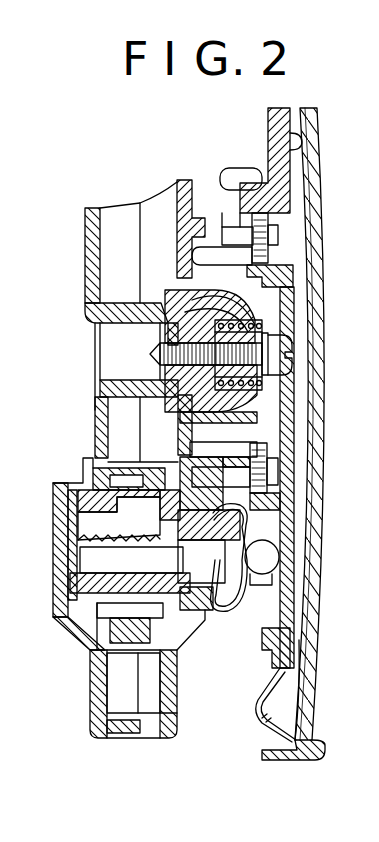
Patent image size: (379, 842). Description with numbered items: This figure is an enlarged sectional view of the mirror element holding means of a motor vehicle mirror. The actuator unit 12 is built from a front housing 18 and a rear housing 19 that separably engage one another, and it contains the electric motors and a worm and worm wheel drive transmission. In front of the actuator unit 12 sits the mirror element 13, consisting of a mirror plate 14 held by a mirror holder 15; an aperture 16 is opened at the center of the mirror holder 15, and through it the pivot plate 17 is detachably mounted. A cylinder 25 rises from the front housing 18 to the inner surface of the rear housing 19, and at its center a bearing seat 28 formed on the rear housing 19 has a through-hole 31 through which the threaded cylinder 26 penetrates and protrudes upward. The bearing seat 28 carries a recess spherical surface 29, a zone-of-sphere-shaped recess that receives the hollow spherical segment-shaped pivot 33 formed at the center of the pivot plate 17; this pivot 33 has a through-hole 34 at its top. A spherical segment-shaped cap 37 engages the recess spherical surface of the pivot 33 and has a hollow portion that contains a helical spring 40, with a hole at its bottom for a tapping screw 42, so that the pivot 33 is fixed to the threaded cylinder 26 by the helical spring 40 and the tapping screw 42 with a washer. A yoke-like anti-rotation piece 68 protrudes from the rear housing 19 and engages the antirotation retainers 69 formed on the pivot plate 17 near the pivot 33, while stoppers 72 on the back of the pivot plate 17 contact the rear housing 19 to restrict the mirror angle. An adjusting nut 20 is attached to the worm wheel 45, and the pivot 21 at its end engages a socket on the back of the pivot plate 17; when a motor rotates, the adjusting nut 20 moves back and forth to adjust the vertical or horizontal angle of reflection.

The actuator unit 12 is at (155, 738).
The mirror element 13 is at (322, 469).
The mirror plate 14 is at (307, 708).
The mirror holder 15 is at (262, 727).
The aperture 16 is at (290, 183).
The pivot plate 17 is at (254, 667).
The front housing 18 is at (90, 723).
The rear housing 19 is at (168, 723).
The adjusting nut 20 is at (214, 612).
The pivot 21 is at (263, 562).
The cylinder 25 is at (98, 322).
The threaded cylinder 26 is at (180, 338).
The bearing seat 28 is at (192, 254).
The recess spherical surface 29 is at (186, 410).
The through-hole 31 is at (165, 379).
The hollow spherical segment-shaped pivot 33 is at (296, 274).
The through-hole 34 is at (186, 306).
The spherical segment-shaped cap 37 is at (260, 300).
The helical spring 40 is at (247, 393).
The tapping screw 42 is at (275, 365).
The worm wheel 45 is at (97, 638).
The anti-rotation piece 68 is at (237, 232).
The antirotation retainer 69 is at (258, 257).
The stopper 72 is at (236, 178).